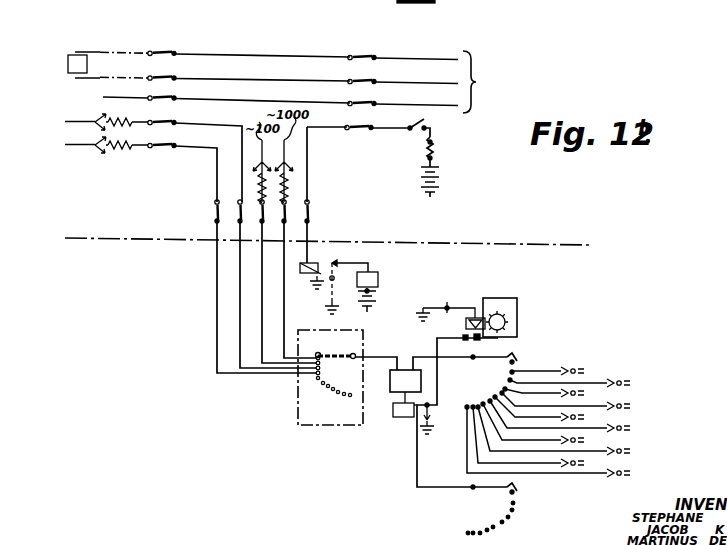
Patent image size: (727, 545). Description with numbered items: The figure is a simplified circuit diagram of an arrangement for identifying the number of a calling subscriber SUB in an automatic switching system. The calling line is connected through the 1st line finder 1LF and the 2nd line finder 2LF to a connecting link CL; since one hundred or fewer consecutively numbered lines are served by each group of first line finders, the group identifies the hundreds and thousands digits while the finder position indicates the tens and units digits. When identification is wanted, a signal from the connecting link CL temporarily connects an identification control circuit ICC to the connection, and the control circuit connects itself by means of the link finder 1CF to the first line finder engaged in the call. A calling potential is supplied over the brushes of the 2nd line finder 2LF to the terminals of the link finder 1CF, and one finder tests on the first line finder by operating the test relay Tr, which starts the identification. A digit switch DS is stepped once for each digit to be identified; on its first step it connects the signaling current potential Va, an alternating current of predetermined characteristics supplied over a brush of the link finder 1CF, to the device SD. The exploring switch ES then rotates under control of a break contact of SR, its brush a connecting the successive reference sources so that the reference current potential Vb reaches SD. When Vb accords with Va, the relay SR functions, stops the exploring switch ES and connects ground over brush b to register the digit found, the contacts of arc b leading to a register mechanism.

The subscriber SUB is at (108, 65).
The 1st line finder 1LF is at (164, 80).
The 2nd line finder 2LF is at (364, 77).
The connecting link CL is at (301, 82).
The link finder 1CF is at (316, 256).
The test relay Tr is at (319, 281).
The digit switch DS is at (330, 377).
The signal discriminating device SD is at (405, 386).
The signal relay SR is at (394, 422).
The signaling current potential Va is at (376, 352).
The reference current potential Vb is at (460, 411).
The exploring switch ES is at (450, 317).
The identification control circuit ICC is at (491, 304).
The contact brush a of exploring switch a is at (569, 418).
The brush b of exploring switch b is at (491, 509).